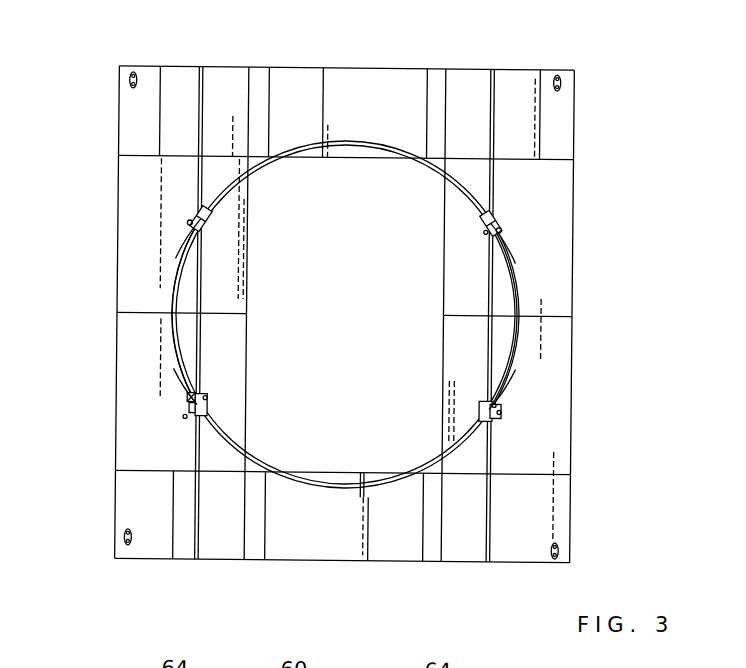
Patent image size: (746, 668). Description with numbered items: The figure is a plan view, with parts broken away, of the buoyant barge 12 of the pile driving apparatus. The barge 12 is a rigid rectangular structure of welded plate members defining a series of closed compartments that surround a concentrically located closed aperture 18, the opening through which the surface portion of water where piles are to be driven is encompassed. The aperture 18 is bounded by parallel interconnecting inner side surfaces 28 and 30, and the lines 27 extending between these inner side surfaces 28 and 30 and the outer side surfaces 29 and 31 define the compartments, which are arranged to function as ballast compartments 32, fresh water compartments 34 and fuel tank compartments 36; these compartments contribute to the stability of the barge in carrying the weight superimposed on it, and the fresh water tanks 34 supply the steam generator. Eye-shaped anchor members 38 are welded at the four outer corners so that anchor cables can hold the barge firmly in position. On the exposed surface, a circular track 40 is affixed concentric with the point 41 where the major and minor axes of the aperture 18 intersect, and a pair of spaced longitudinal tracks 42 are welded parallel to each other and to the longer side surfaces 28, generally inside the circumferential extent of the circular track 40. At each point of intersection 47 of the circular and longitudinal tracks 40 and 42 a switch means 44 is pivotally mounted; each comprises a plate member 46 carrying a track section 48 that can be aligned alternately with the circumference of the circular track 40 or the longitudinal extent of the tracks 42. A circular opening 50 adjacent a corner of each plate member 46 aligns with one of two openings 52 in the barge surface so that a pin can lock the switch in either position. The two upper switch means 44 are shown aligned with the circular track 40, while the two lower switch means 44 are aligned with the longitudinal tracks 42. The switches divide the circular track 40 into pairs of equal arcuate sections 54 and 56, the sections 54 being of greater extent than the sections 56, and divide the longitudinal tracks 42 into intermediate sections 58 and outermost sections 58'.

The buoyant barge 12 is at (513, 78).
The closed aperture 18 is at (333, 392).
The compartment lines 27 is at (248, 133).
The inner side surfaces 28 is at (243, 270).
The outer side surfaces 29 is at (573, 296).
The inner side surfaces 30 is at (345, 160).
The outer side surfaces 31 is at (305, 70).
The ballast compartments 32 is at (166, 78).
The fresh water compartments 34 is at (572, 262).
The fuel tank compartments 36 is at (258, 80).
The eye-shaped anchor members 38 is at (136, 80).
The circular track 40 is at (348, 140).
The intersection point of major and minor axes 41 is at (347, 315).
The longitudinal tracks 42 is at (203, 327).
The switch means 44 is at (212, 226).
The plate member 46 is at (213, 218).
The point of intersection 47 is at (192, 214).
The track section 48 is at (190, 223).
The circular opening 50 is at (188, 232).
The openings in barge surface 52 is at (503, 412).
The arcuate sections 54 is at (365, 122).
The arcuate sections 56 is at (518, 312).
The intermediate sections 58 is at (346, 305).
The outermost sections 58' is at (345, 314).